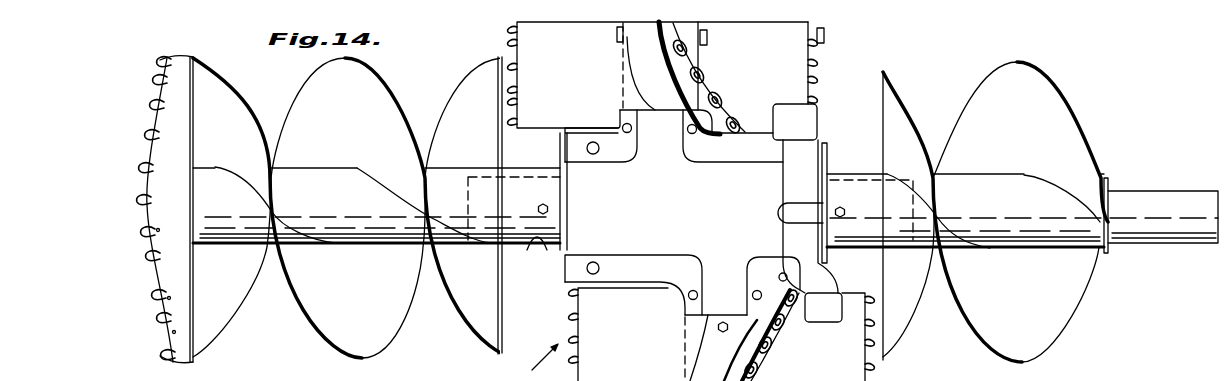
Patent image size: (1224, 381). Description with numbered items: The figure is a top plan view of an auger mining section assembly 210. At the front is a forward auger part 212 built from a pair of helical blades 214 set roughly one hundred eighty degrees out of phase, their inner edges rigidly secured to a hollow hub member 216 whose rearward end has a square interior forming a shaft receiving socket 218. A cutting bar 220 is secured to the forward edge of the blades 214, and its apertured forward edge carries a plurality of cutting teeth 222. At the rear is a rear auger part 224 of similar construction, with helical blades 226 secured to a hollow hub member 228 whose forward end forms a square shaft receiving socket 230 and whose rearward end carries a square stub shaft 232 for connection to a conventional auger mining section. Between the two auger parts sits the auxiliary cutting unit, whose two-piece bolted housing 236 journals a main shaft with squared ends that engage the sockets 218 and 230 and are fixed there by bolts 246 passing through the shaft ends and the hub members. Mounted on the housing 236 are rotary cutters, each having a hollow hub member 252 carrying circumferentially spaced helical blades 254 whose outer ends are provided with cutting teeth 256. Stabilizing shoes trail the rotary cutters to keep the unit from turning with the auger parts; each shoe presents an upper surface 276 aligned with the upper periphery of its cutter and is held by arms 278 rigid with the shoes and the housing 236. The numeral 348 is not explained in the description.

The auger mining section assembly 210 is at (895, 66).
The forward auger part 212 is at (388, 80).
The helical blades 214 is at (218, 105).
The hollow hub member 216 is at (360, 242).
The shaft receiving socket 218 is at (543, 249).
The cutting bar 220 is at (160, 247).
The cutting teeth 222 is at (152, 288).
The rear auger part 224 is at (1105, 78).
The helical blades 226 is at (893, 107).
The hollow hub member 228 is at (991, 230).
The shaft receiving socket 230 is at (847, 258).
The stub shaft 232 is at (1125, 243).
The housing 236 is at (667, 218).
The bolts 246 is at (538, 208).
The hollow hub member 252 is at (640, 65).
The helical blades 254 is at (708, 83).
The cutting teeth 256 is at (762, 358).
The upper surface 276 is at (807, 123).
The arms 278 is at (790, 236).
The housing fasteners 348 is at (517, 25).